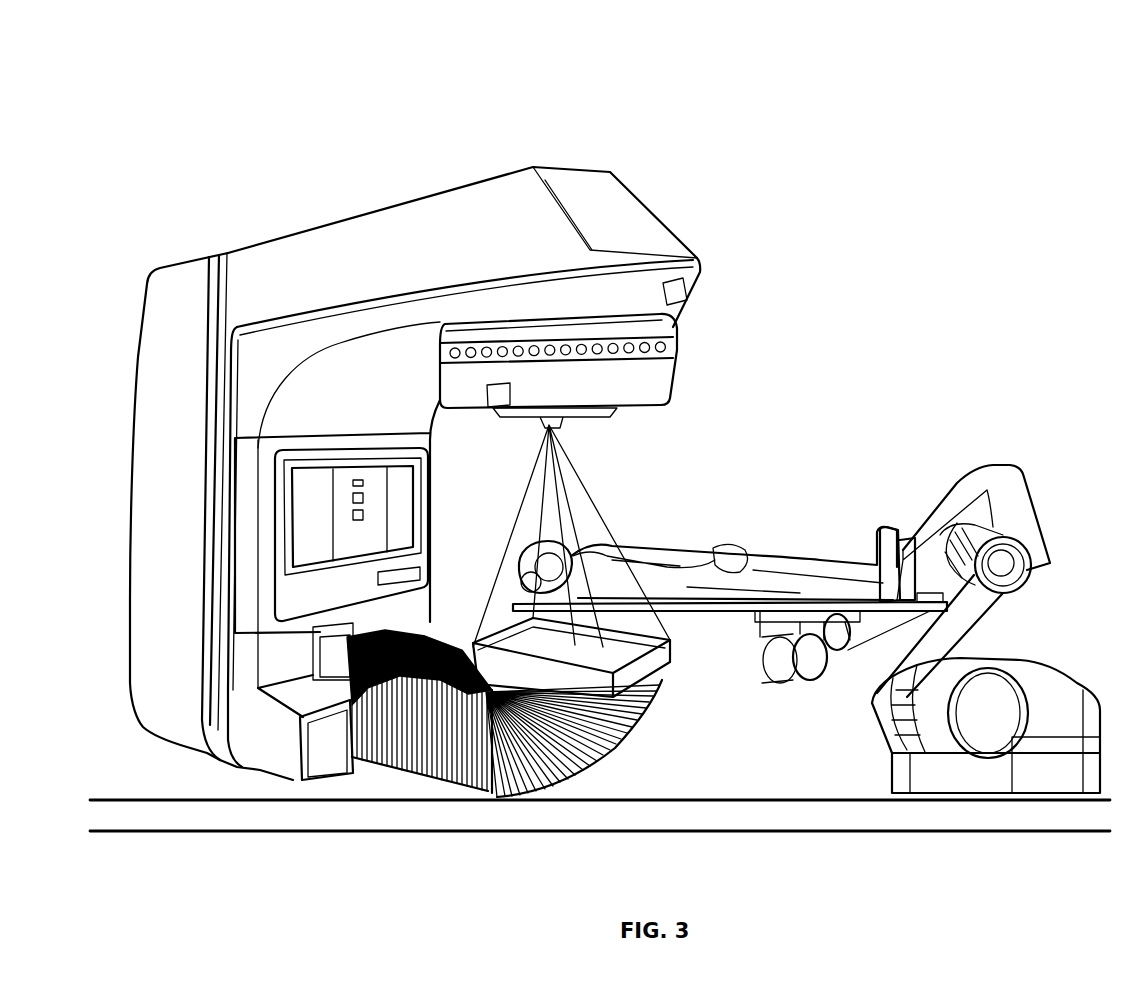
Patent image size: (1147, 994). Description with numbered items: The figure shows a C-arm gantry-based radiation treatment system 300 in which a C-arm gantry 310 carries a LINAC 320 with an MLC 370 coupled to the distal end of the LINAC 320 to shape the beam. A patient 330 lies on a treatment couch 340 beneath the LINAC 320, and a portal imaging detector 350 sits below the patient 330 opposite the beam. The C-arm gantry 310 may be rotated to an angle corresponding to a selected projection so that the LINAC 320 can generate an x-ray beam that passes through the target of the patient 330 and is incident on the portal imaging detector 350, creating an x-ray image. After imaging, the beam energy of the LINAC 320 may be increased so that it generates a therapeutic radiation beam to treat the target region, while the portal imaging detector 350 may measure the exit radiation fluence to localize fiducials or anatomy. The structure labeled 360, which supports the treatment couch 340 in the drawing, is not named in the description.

The C-arm gantry-based radiation treatment system 300 is at (163, 48).
The C-arm gantry 310 is at (400, 205).
The LINAC 320 is at (677, 357).
The patient 330 is at (530, 540).
The treatment couch 340 is at (513, 600).
The portal imaging detector 350 is at (673, 657).
The robotic arm 360 is at (1031, 480).
The MLC 370 is at (564, 423).